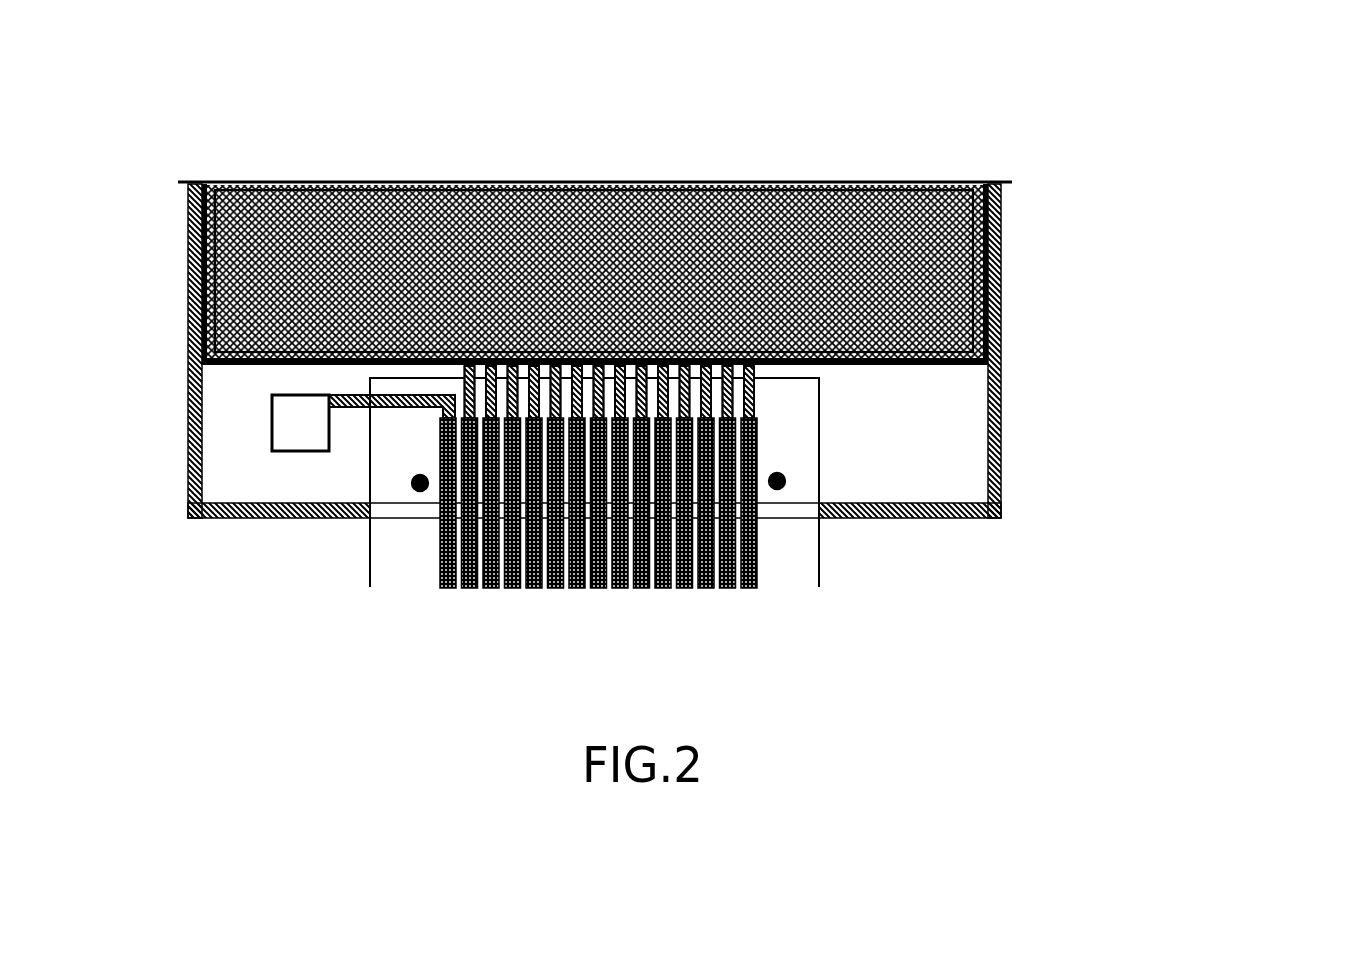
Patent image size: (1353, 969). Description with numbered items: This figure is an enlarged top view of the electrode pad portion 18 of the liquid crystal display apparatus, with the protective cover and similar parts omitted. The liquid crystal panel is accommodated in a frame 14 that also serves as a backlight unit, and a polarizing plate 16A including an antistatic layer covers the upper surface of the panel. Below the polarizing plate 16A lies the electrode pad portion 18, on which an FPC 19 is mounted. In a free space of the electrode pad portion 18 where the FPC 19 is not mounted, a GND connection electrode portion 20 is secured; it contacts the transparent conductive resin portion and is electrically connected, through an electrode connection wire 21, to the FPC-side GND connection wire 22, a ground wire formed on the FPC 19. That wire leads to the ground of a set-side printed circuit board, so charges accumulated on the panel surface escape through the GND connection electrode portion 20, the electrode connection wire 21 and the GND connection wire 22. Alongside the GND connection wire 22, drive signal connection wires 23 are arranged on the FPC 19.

The frame 14 is at (1001, 453).
The polarizing plate 16A is at (1001, 268).
The electrode pad portion 18 is at (842, 453).
The FPC (Flexible Printed Circuit) 19 is at (803, 556).
The GND connection electrode portion 20 is at (287, 420).
The electrode connection wire 21 is at (380, 405).
The FPC-side GND connection wire 22 is at (445, 588).
The drive signal connection wires 23 is at (758, 600).